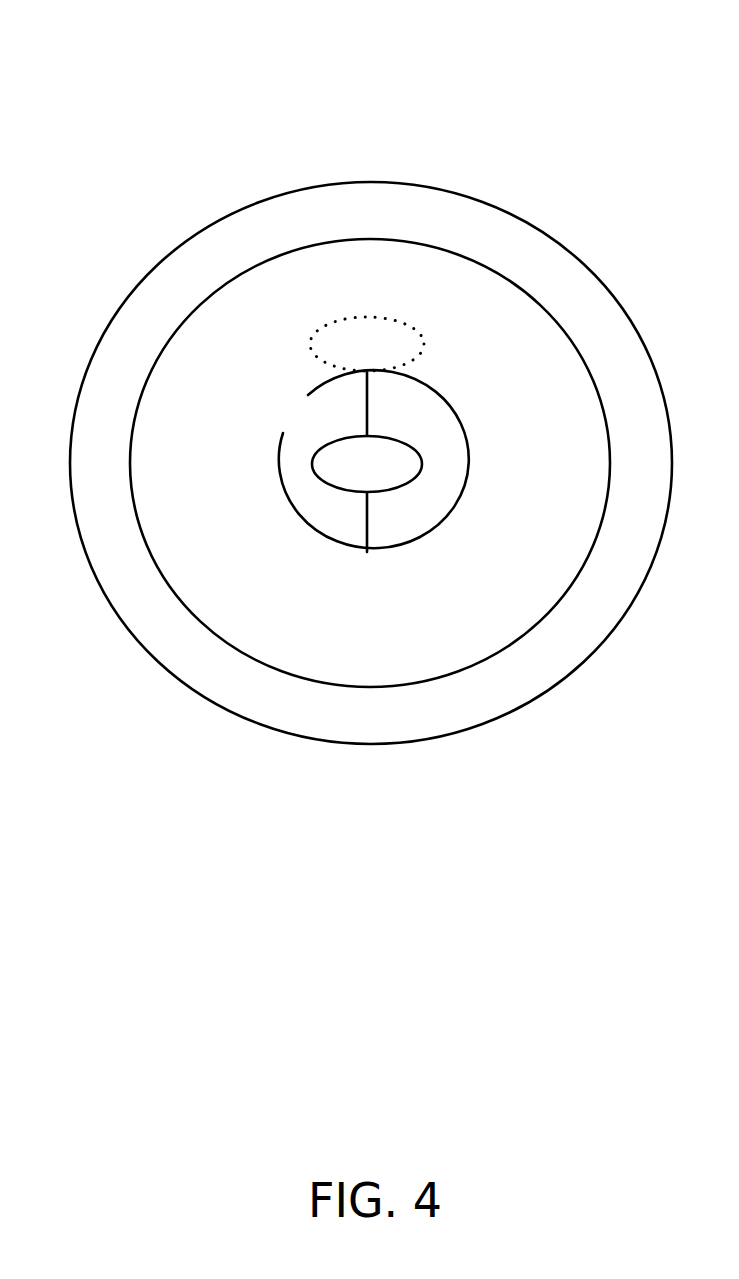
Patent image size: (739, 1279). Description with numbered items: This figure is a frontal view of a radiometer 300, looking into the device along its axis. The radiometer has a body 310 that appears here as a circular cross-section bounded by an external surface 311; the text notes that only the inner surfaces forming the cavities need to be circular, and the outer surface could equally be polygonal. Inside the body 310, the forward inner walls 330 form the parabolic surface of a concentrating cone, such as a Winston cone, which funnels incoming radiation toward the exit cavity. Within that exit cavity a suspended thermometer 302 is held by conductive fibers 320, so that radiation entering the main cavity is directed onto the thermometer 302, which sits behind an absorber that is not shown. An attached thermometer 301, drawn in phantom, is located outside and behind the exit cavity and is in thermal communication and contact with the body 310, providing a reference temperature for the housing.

The radiometer 300 is at (509, 72).
The attached thermometer 301 is at (382, 318).
The suspended thermometer 302 is at (312, 464).
The body 310 is at (208, 256).
The external surface 311 is at (133, 292).
The conductive fibers 320 is at (367, 411).
The forward inner walls 330 is at (551, 316).